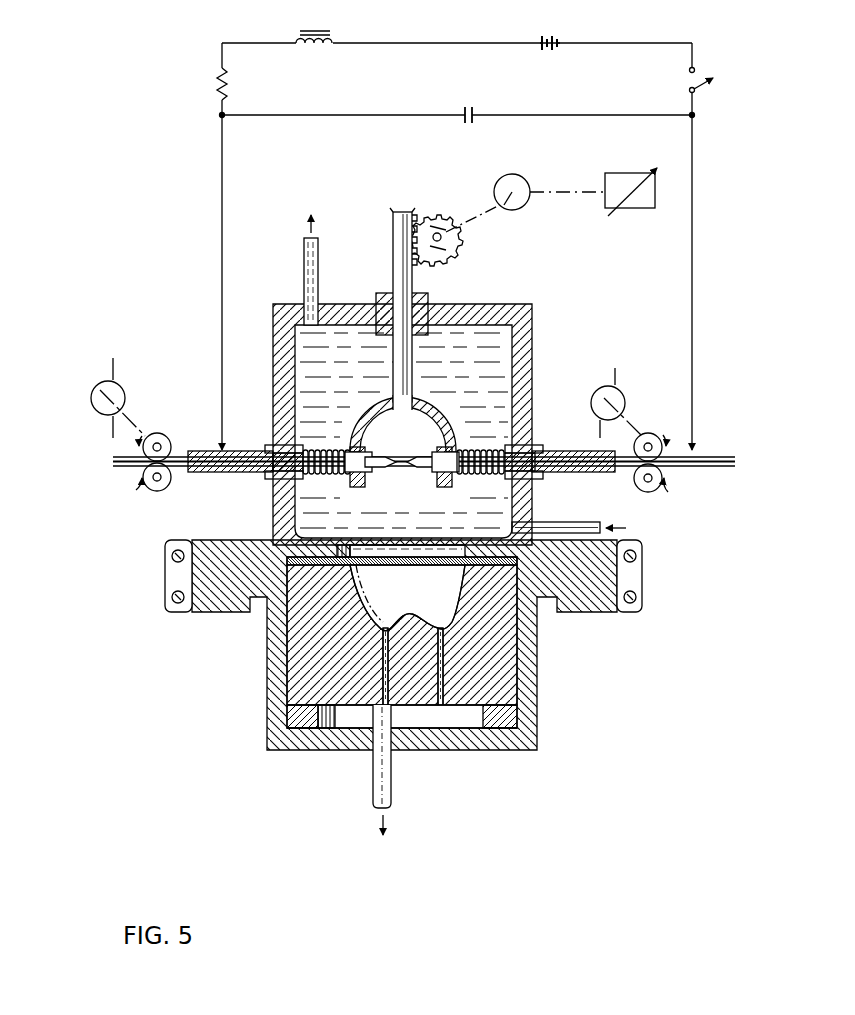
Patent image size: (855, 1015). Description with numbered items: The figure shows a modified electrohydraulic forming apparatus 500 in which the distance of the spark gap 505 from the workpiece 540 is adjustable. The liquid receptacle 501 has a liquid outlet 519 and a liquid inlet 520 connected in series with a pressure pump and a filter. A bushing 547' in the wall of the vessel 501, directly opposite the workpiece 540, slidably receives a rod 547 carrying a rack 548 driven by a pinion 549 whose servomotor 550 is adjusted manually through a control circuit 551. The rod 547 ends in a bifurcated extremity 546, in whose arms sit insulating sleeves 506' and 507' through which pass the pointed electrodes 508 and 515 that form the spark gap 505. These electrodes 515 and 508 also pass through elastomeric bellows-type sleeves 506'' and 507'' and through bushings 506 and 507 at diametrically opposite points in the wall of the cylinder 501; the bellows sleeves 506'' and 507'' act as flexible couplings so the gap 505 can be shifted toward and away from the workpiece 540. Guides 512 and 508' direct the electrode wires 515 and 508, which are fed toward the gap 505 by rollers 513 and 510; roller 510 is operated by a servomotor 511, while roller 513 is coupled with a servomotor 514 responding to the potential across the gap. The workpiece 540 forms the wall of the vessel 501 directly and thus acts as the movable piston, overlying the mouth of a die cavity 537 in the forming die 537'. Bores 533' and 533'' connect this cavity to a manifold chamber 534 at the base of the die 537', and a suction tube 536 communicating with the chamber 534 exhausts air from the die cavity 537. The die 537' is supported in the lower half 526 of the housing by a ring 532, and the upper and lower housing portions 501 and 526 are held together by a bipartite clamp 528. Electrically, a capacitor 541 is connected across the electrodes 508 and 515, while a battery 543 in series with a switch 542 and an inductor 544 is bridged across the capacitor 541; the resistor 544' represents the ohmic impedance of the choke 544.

The apparatus 500 is at (412, 687).
The liquid receptacle 501 is at (532, 322).
The spark gap 505 is at (405, 468).
The bushing 506 is at (267, 442).
The insulating sleeve 506' is at (345, 445).
The bellows-type sleeve 506'' is at (323, 481).
The bushing 507 is at (538, 443).
The insulating sleeve 507' is at (468, 445).
The bellows-type sleeve 507'' is at (482, 481).
The electrode 508 is at (413, 442).
The guide 508' is at (573, 475).
The roller 510 is at (648, 432).
The servomotor 511 is at (605, 386).
The guide 512 is at (222, 471).
The roller 513 is at (166, 436).
The servomotor 514 is at (95, 388).
The electrode 515 is at (379, 470).
The liquid outlet 519 is at (303, 276).
The liquid inlet 520 is at (590, 522).
The lower half of the apparatus housing 526 is at (540, 676).
The bipartite clamp 528 is at (596, 610).
The ring 532 is at (302, 724).
The bore 533' is at (357, 666).
The bore 533'' is at (464, 666).
The manifold chamber 534 is at (460, 725).
The suction tube 536 is at (373, 781).
The die cavity 537 is at (426, 598).
The forming die 537' is at (543, 712).
The workpiece 540 is at (406, 560).
The capacitor 541 is at (475, 110).
The switch 542 is at (704, 86).
The battery 543 is at (550, 38).
The inductor 544 is at (381, 23).
The resistor 544' is at (181, 246).
The bifurcated extremity 546 is at (415, 408).
The rod 547 is at (377, 291).
The bushing 547' is at (382, 295).
The rack 548 is at (418, 212).
The pinion 549 is at (443, 226).
The servomotor 550 is at (500, 176).
The control circuit 551 is at (660, 172).